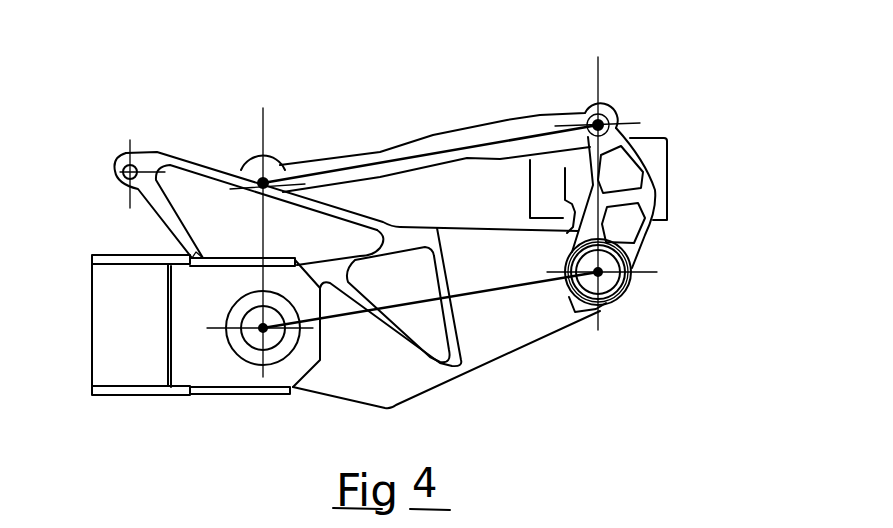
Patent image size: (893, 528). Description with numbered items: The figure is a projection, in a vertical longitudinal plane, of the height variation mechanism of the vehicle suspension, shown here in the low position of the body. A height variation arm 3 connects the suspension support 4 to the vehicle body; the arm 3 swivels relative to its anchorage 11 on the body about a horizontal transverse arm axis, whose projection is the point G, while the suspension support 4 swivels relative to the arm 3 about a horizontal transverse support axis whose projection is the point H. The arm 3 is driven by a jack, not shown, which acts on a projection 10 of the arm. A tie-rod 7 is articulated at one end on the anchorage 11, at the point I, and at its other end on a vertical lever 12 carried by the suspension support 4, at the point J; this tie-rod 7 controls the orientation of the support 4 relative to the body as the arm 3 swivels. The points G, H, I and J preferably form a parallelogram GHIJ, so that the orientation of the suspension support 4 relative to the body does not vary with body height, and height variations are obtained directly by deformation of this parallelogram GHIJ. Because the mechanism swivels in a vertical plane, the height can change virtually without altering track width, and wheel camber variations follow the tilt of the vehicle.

The height variation arm 3 is at (497, 342).
The suspension support 4 is at (658, 169).
The tie-rod 7 is at (358, 152).
The projection 10 is at (180, 165).
The anchorage 11 is at (115, 300).
The vertical lever 12 is at (647, 223).
The projection of the arm axis G is at (263, 328).
The projection of the suspension support axis H is at (620, 297).
The projection of the centre of articulation of the rod on the anchorage I is at (252, 176).
The projection of the centre of articulation of the rod on the vertical lever J is at (587, 117).
The parallelogram GHIJ is at (523, 285).